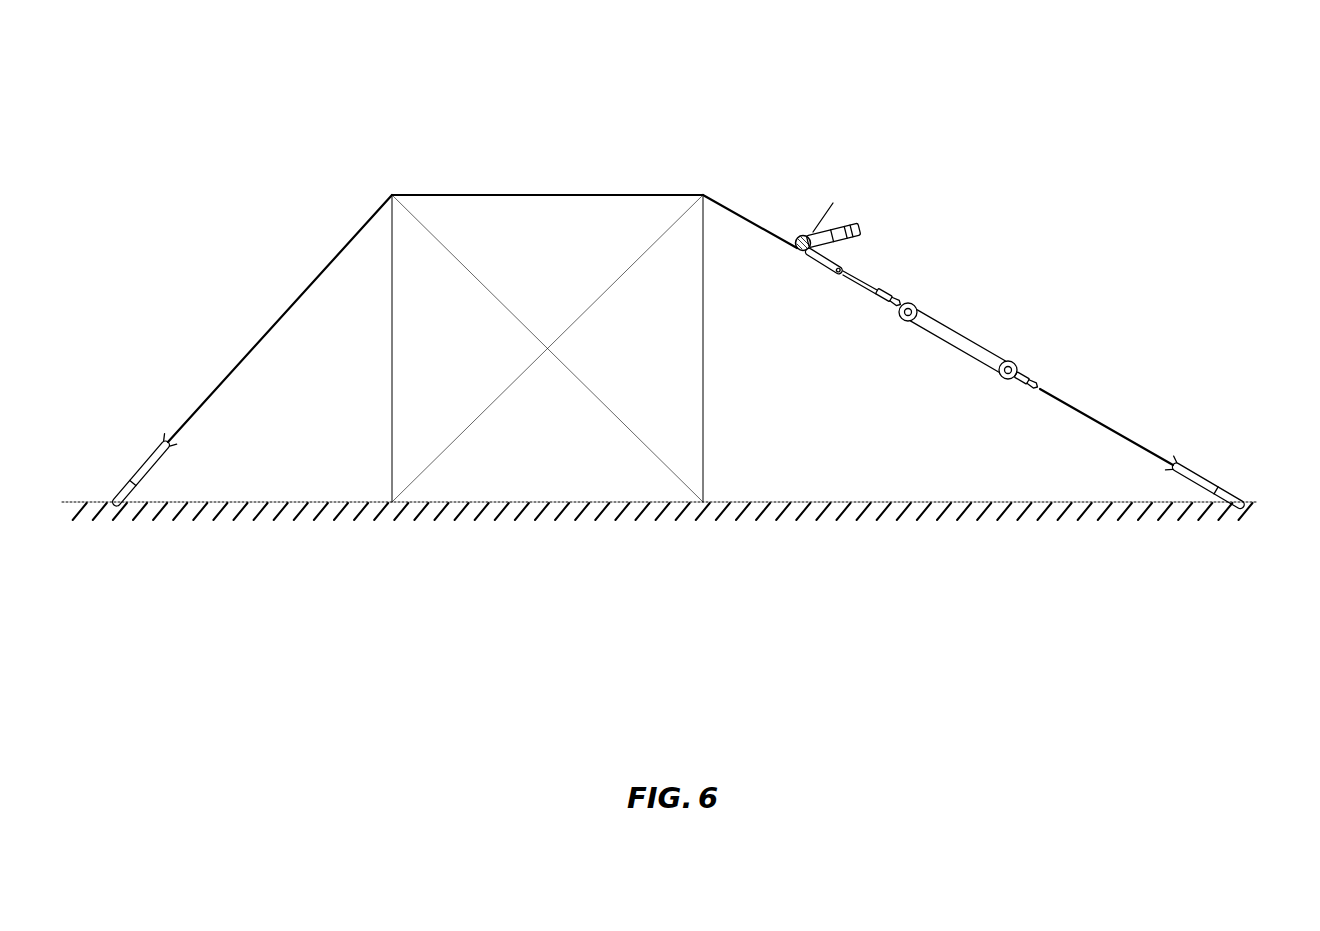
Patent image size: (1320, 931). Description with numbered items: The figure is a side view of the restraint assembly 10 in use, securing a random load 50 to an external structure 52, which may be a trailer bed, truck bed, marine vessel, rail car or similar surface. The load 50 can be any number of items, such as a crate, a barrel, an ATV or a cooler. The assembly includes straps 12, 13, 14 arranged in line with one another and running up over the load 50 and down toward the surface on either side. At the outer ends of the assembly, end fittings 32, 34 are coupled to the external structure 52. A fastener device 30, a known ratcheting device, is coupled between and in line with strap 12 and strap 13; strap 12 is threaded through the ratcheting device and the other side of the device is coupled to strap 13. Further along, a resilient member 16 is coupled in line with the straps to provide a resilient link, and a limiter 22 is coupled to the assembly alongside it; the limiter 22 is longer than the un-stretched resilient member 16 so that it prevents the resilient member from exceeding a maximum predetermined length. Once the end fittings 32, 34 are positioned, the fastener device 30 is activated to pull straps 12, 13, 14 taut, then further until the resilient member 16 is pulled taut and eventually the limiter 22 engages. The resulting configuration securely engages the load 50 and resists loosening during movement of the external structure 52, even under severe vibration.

The restraint assembly 10 is at (332, 158).
The strap 12 is at (262, 343).
The strap 13 is at (863, 279).
The strap 14 is at (1097, 420).
The resilient member 16 is at (954, 340).
The limiter 22 is at (933, 338).
The fastener device 30 is at (857, 203).
The end fitting 32 is at (140, 466).
The end fitting 34 is at (1195, 470).
The load 50 is at (704, 375).
The external structure 52 is at (832, 502).